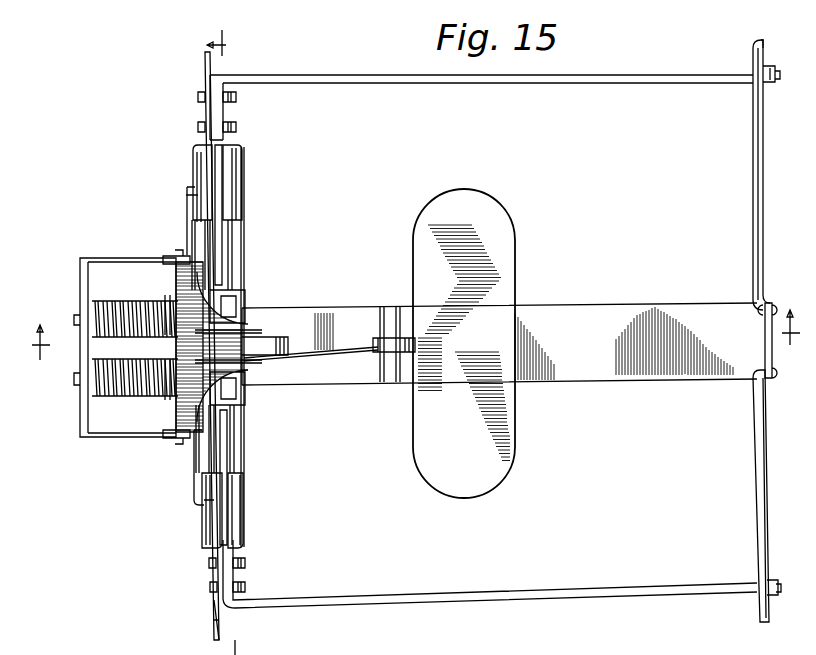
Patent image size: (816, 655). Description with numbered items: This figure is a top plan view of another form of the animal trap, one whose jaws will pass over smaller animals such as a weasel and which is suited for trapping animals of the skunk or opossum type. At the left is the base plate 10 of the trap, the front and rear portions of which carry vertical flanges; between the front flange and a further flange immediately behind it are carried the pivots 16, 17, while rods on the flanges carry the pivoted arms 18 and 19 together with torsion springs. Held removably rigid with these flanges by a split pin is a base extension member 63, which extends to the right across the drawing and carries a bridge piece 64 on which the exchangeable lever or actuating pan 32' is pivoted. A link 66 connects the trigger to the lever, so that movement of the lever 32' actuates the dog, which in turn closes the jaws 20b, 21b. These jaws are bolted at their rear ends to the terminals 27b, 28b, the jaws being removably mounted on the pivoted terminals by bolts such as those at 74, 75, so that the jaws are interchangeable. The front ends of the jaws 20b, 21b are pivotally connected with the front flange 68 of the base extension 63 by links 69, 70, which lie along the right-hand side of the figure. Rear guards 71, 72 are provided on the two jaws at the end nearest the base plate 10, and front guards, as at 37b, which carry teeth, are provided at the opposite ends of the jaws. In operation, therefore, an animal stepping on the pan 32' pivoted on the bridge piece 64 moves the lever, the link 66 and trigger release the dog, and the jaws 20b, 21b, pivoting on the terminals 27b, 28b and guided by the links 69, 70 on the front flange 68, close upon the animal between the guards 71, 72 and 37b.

The base plate 10 is at (181, 347).
The pivot 16 is at (413, 321).
The pivot 17 is at (240, 342).
The arm 18 is at (244, 512).
The arm 19 is at (242, 184).
The jaw 20b is at (580, 592).
The jaw 21b is at (552, 84).
The terminal 27b is at (222, 540).
The terminal 28b is at (219, 150).
The lever or actuating pan 32' is at (464, 343).
The front guard 37b is at (745, 645).
The base extension member 63 is at (499, 344).
The bridge piece 64 is at (397, 306).
The link 66 is at (330, 366).
The front flange 68 is at (765, 343).
The link 69 is at (757, 484).
The link 70 is at (753, 210).
The rear guard 71 is at (214, 624).
The rear guard 72 is at (205, 56).
The bolt 74 is at (246, 587).
The bolt 75 is at (198, 127).